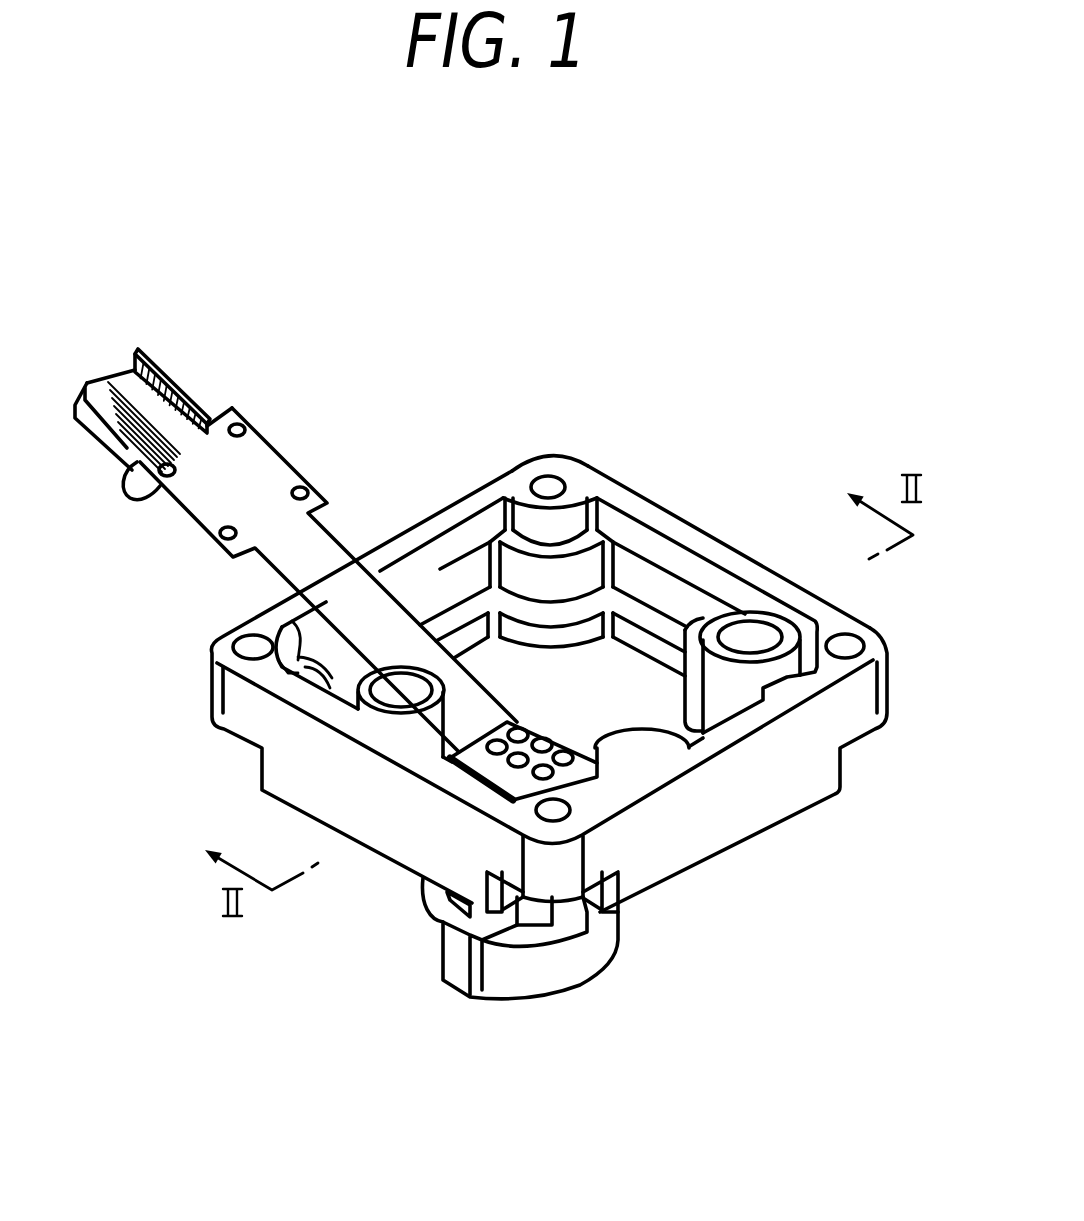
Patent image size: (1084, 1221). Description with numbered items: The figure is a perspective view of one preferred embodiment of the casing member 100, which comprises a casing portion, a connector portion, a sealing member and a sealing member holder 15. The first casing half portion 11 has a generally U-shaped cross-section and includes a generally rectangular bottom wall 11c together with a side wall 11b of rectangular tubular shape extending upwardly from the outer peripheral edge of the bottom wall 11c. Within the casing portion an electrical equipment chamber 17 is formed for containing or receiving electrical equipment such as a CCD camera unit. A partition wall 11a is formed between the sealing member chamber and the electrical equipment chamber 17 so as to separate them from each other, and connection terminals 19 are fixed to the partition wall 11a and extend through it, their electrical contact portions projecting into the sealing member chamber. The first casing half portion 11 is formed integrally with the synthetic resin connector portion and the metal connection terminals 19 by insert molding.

The casing member 100 is at (898, 394).
The first casing half portion 11 is at (639, 504).
The partition wall 11a is at (660, 736).
The side wall 11b is at (716, 537).
The bottom wall 11c is at (507, 667).
The sealing member holder 15 is at (578, 968).
The electrical equipment chamber 17 is at (430, 587).
The connection terminals 19 is at (547, 777).